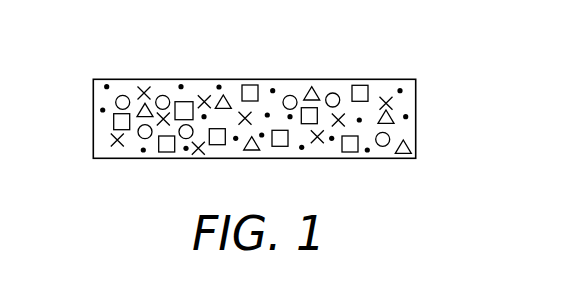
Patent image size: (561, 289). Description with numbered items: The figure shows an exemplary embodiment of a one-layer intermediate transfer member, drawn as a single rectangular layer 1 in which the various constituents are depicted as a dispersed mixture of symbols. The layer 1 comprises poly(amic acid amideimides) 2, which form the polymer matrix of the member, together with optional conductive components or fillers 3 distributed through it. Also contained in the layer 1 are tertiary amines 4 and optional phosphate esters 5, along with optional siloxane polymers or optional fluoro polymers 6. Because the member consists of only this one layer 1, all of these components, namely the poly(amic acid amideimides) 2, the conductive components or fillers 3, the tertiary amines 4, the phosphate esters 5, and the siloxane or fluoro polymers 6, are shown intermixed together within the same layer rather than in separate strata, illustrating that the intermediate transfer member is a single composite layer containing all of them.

The layer 1 is at (416, 90).
The poly(amic acid amideimides) 2 is at (280, 147).
The conductive components or fillers 3 is at (115, 142).
The tertiary amines 4 is at (390, 137).
The phosphate esters 5 is at (219, 85).
The siloxane polymers or fluoro polymers 6 is at (312, 86).